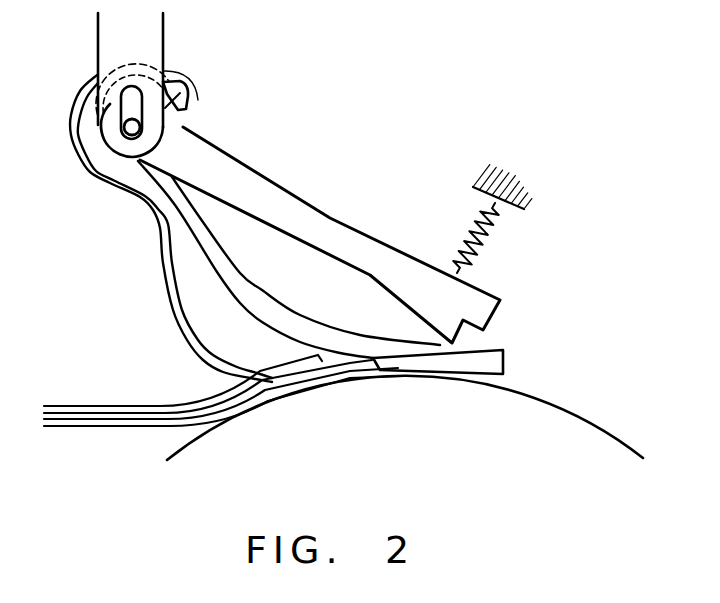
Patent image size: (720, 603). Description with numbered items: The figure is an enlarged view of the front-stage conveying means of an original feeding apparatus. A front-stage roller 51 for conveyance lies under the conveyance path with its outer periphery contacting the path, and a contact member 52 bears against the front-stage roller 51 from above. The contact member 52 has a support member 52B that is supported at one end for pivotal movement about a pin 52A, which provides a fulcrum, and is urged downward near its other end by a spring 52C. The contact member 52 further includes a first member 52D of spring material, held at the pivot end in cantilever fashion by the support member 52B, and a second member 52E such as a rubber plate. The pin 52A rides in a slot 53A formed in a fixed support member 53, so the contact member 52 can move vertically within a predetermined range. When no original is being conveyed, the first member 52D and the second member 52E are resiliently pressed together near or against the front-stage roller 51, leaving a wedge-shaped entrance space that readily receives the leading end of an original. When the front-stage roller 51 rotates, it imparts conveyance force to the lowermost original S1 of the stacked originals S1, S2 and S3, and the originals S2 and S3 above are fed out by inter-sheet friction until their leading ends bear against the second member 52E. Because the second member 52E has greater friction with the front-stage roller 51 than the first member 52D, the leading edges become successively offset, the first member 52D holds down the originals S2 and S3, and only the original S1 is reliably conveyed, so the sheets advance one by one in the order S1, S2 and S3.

The front-stage roller 51 is at (535, 427).
The contact member 52 is at (324, 226).
The pin 52A is at (136, 127).
The support member 52B is at (328, 232).
The spring 52C is at (485, 237).
The first member 52D is at (170, 312).
The second member 52E is at (195, 243).
The fixed support member 53 is at (157, 33).
The slot 53A is at (140, 91).
The original S1 is at (140, 426).
The original S2 is at (102, 420).
The original S3 is at (60, 408).